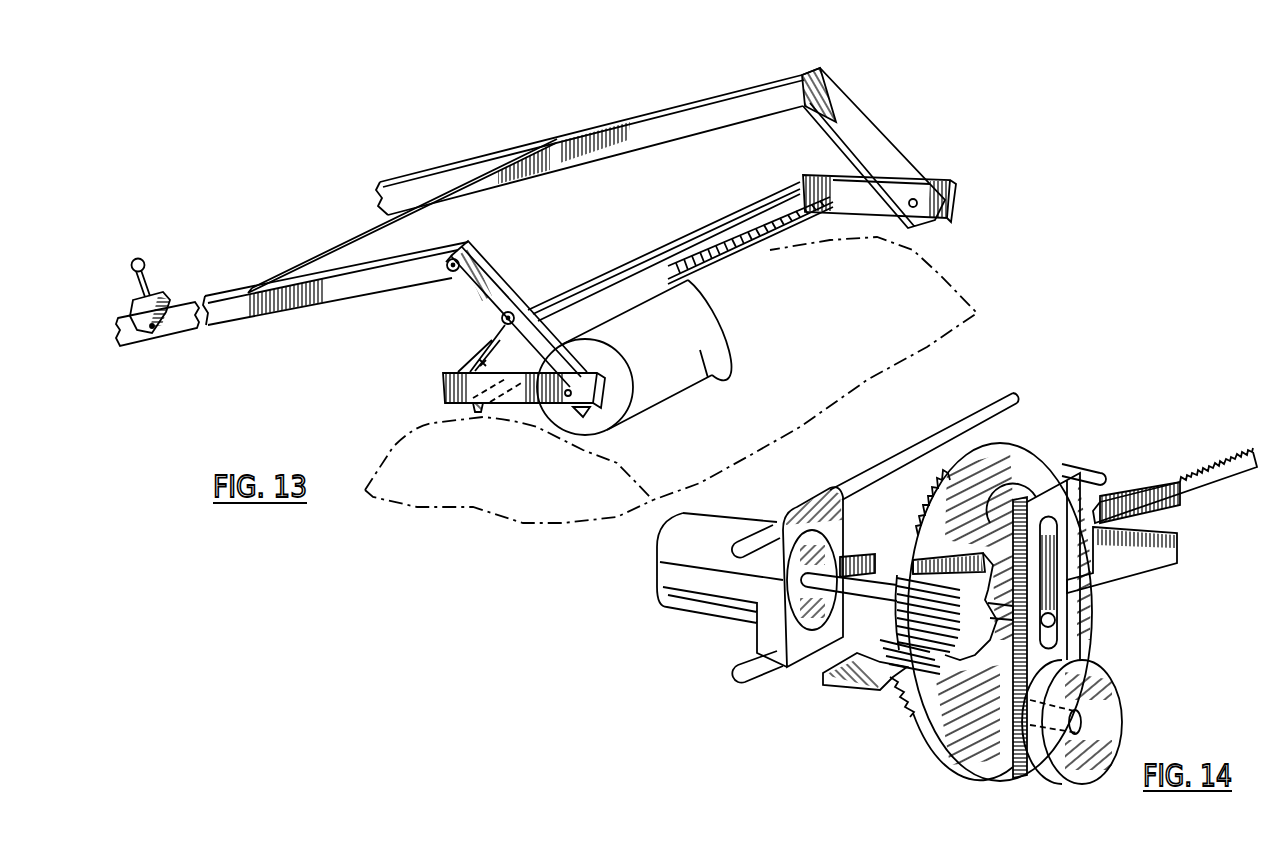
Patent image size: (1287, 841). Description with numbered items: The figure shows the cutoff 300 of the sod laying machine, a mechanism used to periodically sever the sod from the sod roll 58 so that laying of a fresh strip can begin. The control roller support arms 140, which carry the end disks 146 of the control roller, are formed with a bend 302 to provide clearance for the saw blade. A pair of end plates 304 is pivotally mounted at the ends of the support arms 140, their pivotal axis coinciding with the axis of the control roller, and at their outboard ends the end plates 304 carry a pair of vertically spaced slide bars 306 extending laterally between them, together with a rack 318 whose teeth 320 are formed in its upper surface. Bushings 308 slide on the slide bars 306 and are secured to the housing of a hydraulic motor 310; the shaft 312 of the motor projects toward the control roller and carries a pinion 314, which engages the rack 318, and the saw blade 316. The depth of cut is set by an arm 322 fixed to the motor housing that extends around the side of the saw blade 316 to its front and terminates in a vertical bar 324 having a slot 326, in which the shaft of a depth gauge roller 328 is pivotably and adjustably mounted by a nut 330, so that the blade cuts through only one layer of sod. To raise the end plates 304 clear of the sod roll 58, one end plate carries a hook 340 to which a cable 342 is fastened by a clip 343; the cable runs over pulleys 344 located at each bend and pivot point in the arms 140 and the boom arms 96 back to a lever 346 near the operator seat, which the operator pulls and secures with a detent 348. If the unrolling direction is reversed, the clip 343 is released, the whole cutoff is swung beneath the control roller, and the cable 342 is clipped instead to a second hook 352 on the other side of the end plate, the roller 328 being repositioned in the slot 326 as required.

In FIG. 13, the cutoff 300 is at (481, 142).
In FIG. 13, the control roller support arms 140 is at (708, 128).
In FIG. 13, the end plates 304 is at (867, 202).
In FIG. 13, the slide bars 306 is at (693, 262).
In FIG. 14, the slide bars 306 is at (1085, 467).
In FIG. 13, the rack 318 is at (727, 270).
In FIG. 14, the rack 318 is at (1213, 487).
In FIG. 13, the end disks 146 is at (663, 328).
In FIG. 13, the bend 302 is at (485, 265).
In FIG. 13, the pulleys 344 is at (447, 271).
In FIG. 13, the cable 342 is at (478, 303).
In FIG. 13, the clip 343 is at (477, 362).
In FIG. 13, the hook 340 is at (468, 360).
In FIG. 13, the second hook 352 is at (478, 407).
In FIG. 13, the sod roll 58 is at (771, 398).
In FIG. 13, the boom arms 96 is at (183, 338).
In FIG. 13, the lever 346 is at (150, 278).
In FIG. 13, the detent 348 is at (145, 328).
In FIG. 14, the hydraulic motor 310 is at (722, 530).
In FIG. 14, the bushings 308 is at (793, 507).
In FIG. 14, the shaft 312 is at (858, 568).
In FIG. 14, the arm 322 is at (878, 560).
In FIG. 14, the pinion 314 is at (960, 638).
In FIG. 14, the vertical bar 324 is at (1006, 500).
In FIG. 14, the saw blade 316 is at (913, 717).
In FIG. 14, the slot 326 is at (1082, 645).
In FIG. 14, the nut 330 is at (1098, 670).
In FIG. 14, the depth gauge roller 328 is at (1110, 727).
In FIG. 14, the teeth 320 is at (1147, 496).